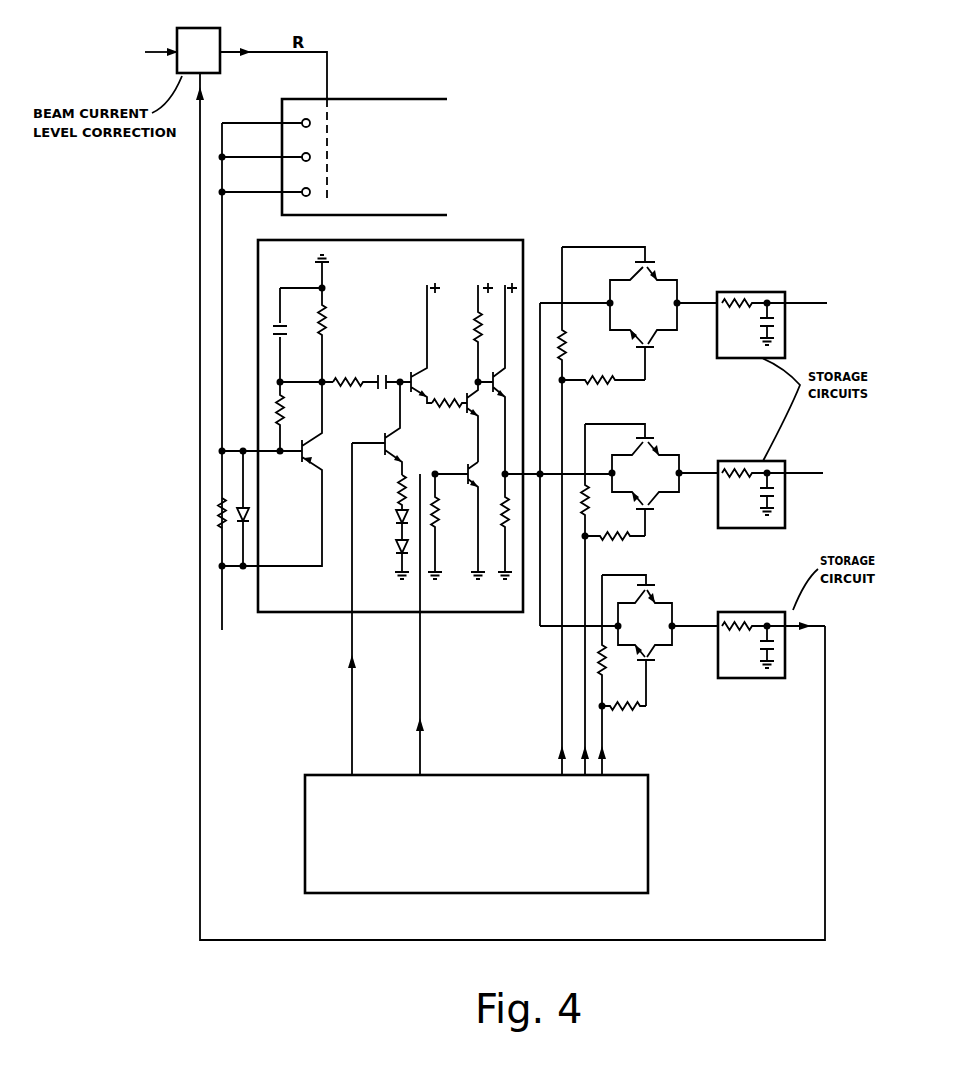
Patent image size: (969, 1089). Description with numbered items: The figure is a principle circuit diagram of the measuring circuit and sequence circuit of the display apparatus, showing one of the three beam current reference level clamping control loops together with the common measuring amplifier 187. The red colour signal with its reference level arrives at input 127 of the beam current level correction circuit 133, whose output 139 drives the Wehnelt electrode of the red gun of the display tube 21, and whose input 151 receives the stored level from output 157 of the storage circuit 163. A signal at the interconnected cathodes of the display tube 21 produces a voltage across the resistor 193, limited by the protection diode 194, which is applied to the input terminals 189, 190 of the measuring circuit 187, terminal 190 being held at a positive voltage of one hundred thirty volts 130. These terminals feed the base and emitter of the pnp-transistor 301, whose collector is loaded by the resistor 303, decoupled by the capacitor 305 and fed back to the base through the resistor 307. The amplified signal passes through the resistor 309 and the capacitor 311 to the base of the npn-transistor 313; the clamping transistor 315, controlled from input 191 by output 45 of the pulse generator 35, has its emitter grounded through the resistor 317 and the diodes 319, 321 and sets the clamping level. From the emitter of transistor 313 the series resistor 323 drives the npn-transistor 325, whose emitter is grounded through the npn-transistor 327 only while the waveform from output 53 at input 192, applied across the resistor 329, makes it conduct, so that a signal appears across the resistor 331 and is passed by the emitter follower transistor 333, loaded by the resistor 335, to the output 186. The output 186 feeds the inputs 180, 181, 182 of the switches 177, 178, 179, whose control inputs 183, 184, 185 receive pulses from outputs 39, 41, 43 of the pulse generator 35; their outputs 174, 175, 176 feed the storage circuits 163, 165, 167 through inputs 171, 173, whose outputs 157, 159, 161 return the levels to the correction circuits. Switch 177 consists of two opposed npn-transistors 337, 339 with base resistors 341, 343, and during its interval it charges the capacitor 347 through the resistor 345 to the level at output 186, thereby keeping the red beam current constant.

The display tube 21 is at (385, 115).
The pulse generator 35 is at (326, 828).
The output of the pulse generator 39 is at (606, 775).
The output of the pulse generator 41 is at (585, 775).
The output of the pulse generator 43 is at (562, 775).
The output of the pulse generator 45 is at (353, 775).
The output of the pulse generator 53 is at (421, 775).
The input of beam current level correction circuit 127 is at (176, 50).
The positive voltage 130 is at (222, 630).
The beam current level correction circuit 133 is at (197, 44).
The output of beam current level correction circuit 139 is at (223, 50).
The input of beam current level correction circuit 151 is at (203, 76).
The output of storage circuit 157 is at (791, 623).
The output of storage circuit 159 is at (791, 466).
The output of storage circuit 161 is at (790, 293).
The storage circuit 163 is at (760, 618).
The storage circuit 165 is at (749, 522).
The storage circuit 167 is at (736, 345).
The input of storage circuit 171 is at (719, 470).
The input of storage circuit 173 is at (717, 304).
The output of switch 174 is at (680, 620).
The output of switch 175 is at (681, 469).
The output of switch 176 is at (683, 299).
The switch 177 is at (660, 638).
The switch 178 is at (661, 485).
The switch 179 is at (661, 315).
The input of switch 180 is at (617, 622).
The input of switch 181 is at (612, 470).
The input of switch 182 is at (610, 300).
The control signal input of switch 183 is at (603, 728).
The control signal input of switch 184 is at (588, 540).
The control signal input of switch 185 is at (566, 385).
The output of the measuring circuit 186 is at (528, 478).
The measuring circuit 187 is at (494, 250).
The input terminal 189 is at (259, 450).
The input terminal 190 is at (259, 568).
The input of the measuring circuit 191 is at (354, 620).
The input of the measuring circuit 192 is at (422, 620).
The resistor 193 is at (212, 513).
The protection diode 194 is at (232, 508).
The pnp-transistor 301 is at (306, 450).
The resistor 303 is at (321, 315).
The capacitor 305 is at (278, 322).
The resistor 307 is at (283, 422).
The resistor 309 is at (343, 378).
The capacitor 311 is at (383, 374).
The npn-transistor 313 is at (415, 385).
The npn-transistor 315 is at (383, 437).
The resistor 317 is at (398, 489).
The diode 319 is at (396, 518).
The diode 321 is at (396, 548).
The series resistor 323 is at (440, 406).
The npn-transistor 325 is at (468, 406).
The npn-transistor 327 is at (463, 471).
The resistor 329 is at (437, 516).
The resistor 331 is at (477, 322).
The npn-transistor 333 is at (490, 378).
The resistor 335 is at (500, 520).
The npn-transistor 337 is at (649, 665).
The npn-transistor 339 is at (651, 583).
The resistor 341 is at (631, 710).
The resistor 343 is at (605, 665).
The resistor 345 is at (745, 606).
The capacitor 347 is at (761, 645).